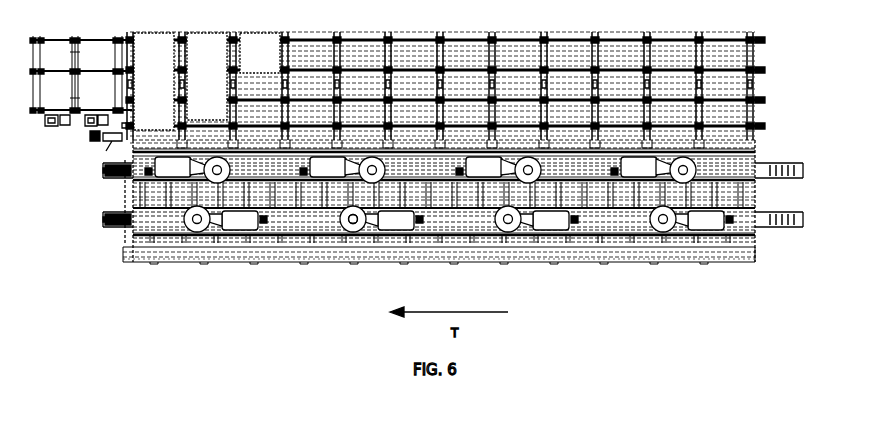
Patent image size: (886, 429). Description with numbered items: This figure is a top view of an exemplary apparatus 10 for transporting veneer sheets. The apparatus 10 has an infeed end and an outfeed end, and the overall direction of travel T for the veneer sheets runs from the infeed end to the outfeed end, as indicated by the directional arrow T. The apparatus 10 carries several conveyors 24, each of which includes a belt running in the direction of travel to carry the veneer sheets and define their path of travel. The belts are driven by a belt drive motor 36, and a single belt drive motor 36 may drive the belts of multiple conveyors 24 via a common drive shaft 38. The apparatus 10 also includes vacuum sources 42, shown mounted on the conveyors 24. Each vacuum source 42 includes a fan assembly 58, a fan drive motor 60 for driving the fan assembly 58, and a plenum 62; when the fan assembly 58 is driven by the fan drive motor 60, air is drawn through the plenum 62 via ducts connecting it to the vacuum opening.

The apparatus 10 is at (118, 298).
The conveyor 24 is at (96, 190).
The belt drive motor 36 is at (118, 229).
The common drive shaft 38 is at (118, 204).
The vacuum source 42 is at (343, 250).
The fan assembly 58 is at (359, 236).
The fan drive motor 60 is at (355, 222).
The plenum 62 is at (328, 222).